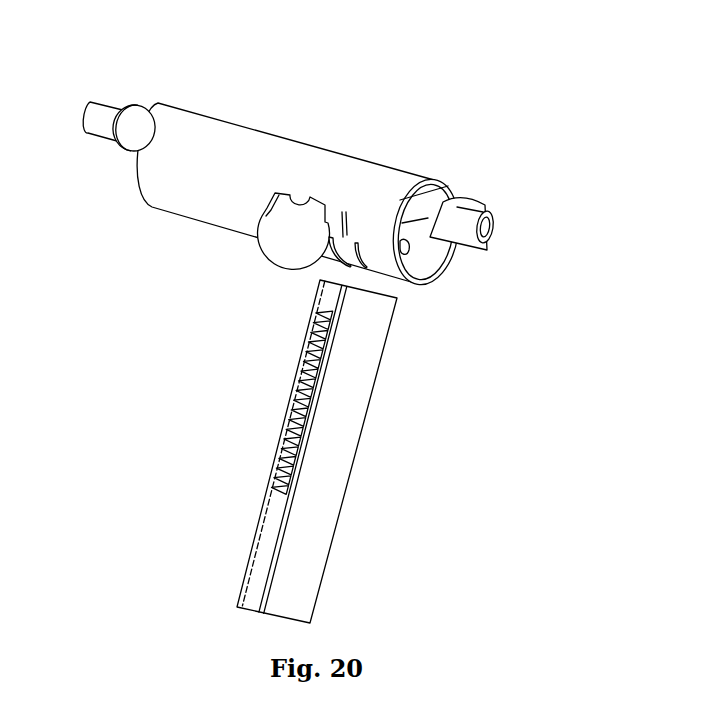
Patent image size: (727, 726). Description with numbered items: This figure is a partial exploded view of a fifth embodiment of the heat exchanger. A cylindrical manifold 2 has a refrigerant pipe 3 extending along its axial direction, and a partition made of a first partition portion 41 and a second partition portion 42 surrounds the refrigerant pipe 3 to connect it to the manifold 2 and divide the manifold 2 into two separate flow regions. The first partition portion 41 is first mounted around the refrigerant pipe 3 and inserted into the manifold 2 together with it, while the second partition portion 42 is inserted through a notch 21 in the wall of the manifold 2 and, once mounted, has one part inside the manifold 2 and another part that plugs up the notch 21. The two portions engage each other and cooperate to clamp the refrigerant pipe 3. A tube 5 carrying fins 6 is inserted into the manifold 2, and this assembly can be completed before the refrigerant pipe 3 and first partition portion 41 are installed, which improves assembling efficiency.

The manifold 2 is at (257, 150).
The refrigerant pipe 3 is at (98, 115).
The first partition portion 41 is at (137, 112).
The second partition portion 42 is at (287, 235).
The notch 21 is at (347, 212).
The tube 5 is at (335, 483).
The fins 6 is at (280, 453).